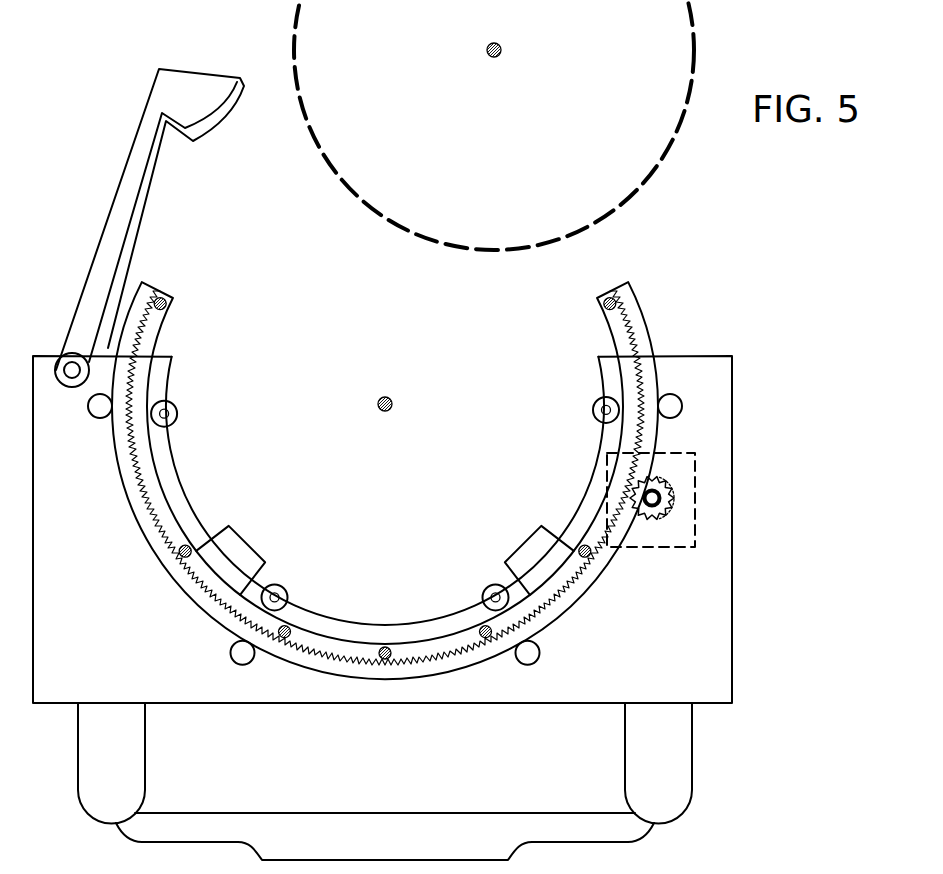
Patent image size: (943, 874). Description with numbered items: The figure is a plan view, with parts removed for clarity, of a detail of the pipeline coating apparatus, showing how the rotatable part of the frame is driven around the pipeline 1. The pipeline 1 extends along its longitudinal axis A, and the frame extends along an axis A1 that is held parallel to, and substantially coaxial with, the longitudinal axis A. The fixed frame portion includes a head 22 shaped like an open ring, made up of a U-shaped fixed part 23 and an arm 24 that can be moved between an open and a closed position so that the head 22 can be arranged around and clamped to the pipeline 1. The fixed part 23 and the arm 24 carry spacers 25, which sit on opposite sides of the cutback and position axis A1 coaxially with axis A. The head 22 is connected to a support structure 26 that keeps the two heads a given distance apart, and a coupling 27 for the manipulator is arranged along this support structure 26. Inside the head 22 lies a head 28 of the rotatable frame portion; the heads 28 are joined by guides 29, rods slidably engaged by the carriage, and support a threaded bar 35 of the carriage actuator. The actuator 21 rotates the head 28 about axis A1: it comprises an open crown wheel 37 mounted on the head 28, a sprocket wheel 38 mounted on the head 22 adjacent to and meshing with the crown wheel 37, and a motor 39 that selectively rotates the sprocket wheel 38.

The pipeline 1 is at (704, 128).
The longitudinal axis A is at (488, 58).
The axis A1 is at (393, 399).
The actuator 21 is at (700, 428).
The head 22 is at (755, 408).
The fixed part 23 is at (80, 655).
The arm 24 is at (118, 193).
The spacers 25 is at (218, 100).
The support structure 26 is at (715, 758).
The coupling 27 is at (403, 833).
The head 28 is at (183, 327).
The guides 29 is at (161, 299).
The threaded bar 35 is at (289, 642).
The open crown wheel 37 is at (628, 350).
The sprocket wheel 38 is at (674, 488).
The motor 39 is at (697, 525).